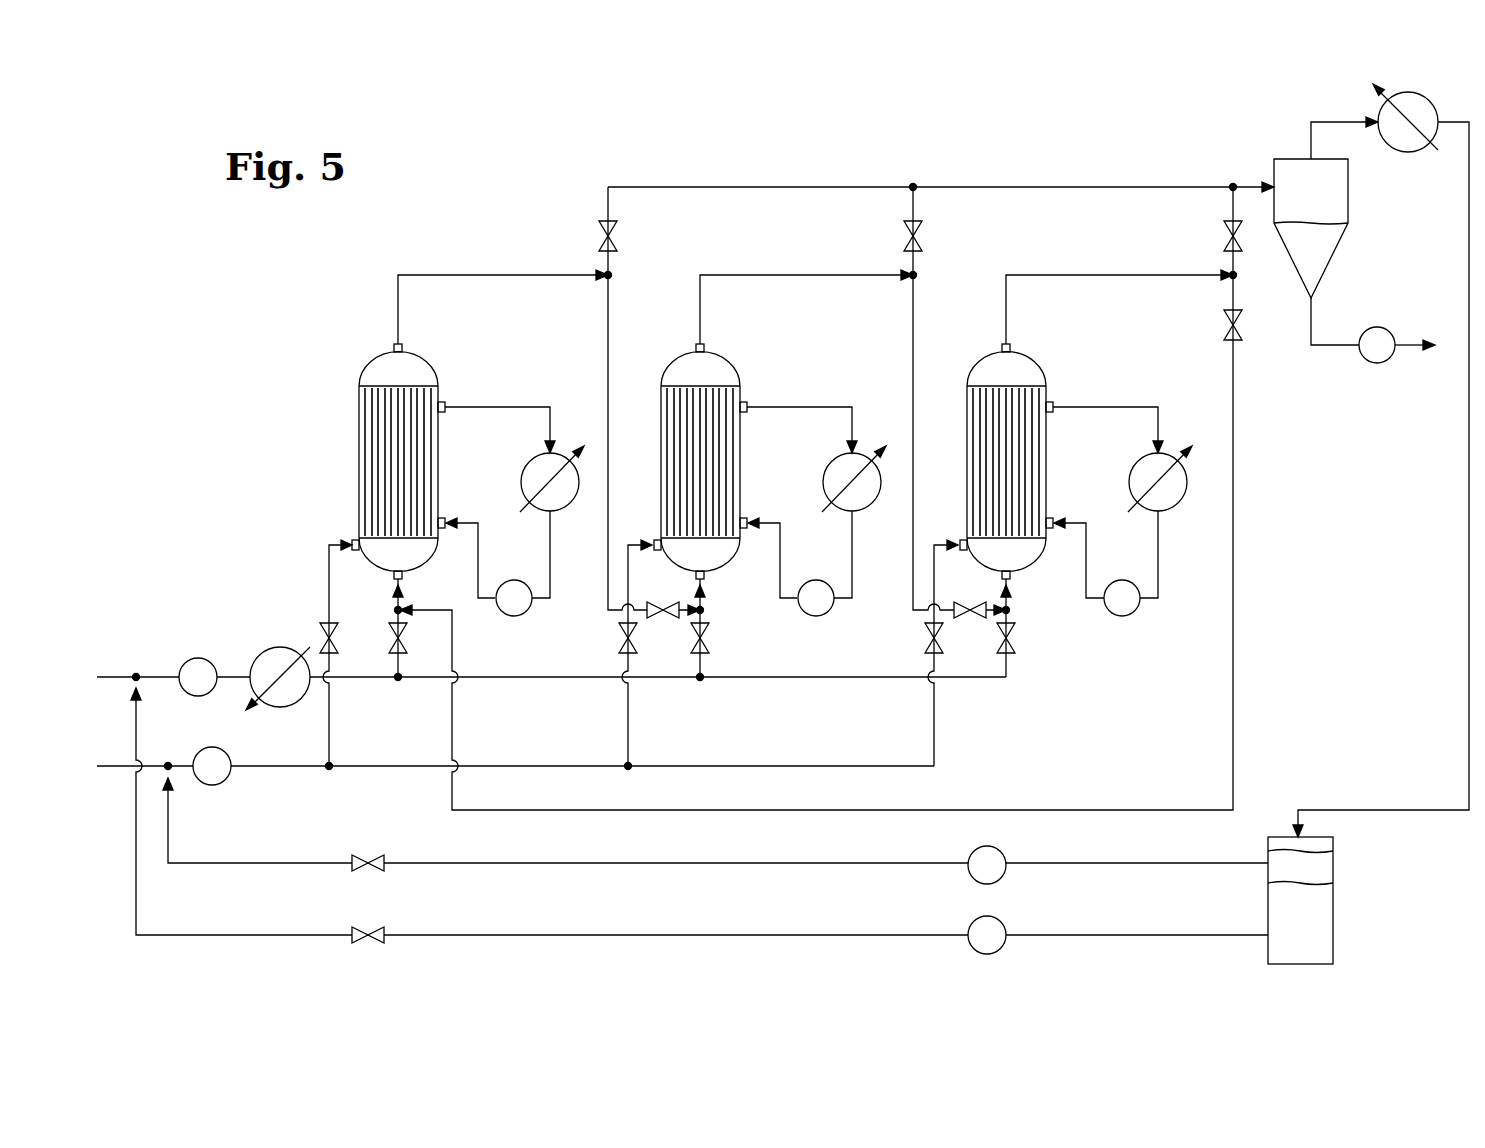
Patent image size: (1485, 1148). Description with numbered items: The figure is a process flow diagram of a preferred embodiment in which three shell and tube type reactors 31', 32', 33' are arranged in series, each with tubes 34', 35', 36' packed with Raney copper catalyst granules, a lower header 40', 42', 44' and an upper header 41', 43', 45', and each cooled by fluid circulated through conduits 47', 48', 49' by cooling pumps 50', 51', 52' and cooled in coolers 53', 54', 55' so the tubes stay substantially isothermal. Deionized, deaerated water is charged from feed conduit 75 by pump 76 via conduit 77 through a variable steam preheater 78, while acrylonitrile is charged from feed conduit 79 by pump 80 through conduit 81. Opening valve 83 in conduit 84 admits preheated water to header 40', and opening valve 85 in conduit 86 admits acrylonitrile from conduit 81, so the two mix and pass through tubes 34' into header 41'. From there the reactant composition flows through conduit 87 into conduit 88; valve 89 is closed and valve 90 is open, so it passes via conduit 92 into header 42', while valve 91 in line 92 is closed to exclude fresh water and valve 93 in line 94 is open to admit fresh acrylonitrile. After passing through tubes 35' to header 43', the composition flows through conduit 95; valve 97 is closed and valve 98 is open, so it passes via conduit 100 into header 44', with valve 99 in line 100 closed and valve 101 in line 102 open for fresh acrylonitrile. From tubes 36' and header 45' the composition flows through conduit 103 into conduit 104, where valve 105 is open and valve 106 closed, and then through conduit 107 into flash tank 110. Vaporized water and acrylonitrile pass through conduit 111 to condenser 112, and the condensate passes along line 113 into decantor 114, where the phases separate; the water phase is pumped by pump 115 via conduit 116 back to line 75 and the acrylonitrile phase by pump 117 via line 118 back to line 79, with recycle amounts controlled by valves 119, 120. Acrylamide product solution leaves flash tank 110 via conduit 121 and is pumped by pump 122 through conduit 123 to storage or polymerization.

The reactor 31' is at (397, 445).
The reactor 32' is at (705, 442).
The reactor 33' is at (1010, 442).
The tubes 34' is at (369, 462).
The tubes 35' is at (674, 462).
The tubes 36' is at (980, 462).
The header 40' is at (414, 564).
The header 41' is at (423, 366).
The header 42' is at (717, 561).
The header 43' is at (728, 366).
The header 44' is at (1021, 561).
The header 45' is at (1034, 366).
The conduit 47' is at (500, 502).
The conduit 48' is at (802, 502).
The conduit 49' is at (1108, 502).
The cooling pump 50' is at (530, 613).
The cooling pump 51' is at (828, 613).
The cooling pump 52' is at (1134, 613).
The cooler 53' is at (528, 476).
The cooler 54' is at (831, 476).
The cooler 55' is at (1136, 476).
The feed conduit 75 is at (108, 676).
The pump 76 is at (199, 658).
The conduit 77 is at (232, 678).
The variable steam preheater 78 is at (268, 648).
The feed conduit 79 is at (163, 765).
The pump 80 is at (222, 760).
The conduit 81 is at (268, 765).
The valve 83 is at (396, 648).
The conduit 84 is at (396, 606).
The valve 85 is at (331, 640).
The conduit 86 is at (328, 588).
The conduit 87 is at (506, 274).
The conduit 88 is at (609, 340).
The valve 89 is at (616, 238).
The valve 90 is at (664, 606).
The valve 91 is at (706, 642).
The conduit 92 is at (706, 606).
The valve 93 is at (630, 642).
The line 94 is at (626, 560).
The conduit 95 is at (799, 274).
The valve 97 is at (922, 240).
The valve 98 is at (970, 606).
The valve 99 is at (1010, 644).
The conduit 100 is at (1012, 606).
The valve 101 is at (936, 644).
The line 102 is at (933, 562).
The conduit 103 is at (1070, 274).
The conduit 104 is at (1236, 276).
The valve 105 is at (1224, 236).
The valve 106 is at (1238, 334).
The conduit 107 is at (1028, 186).
The flash tank 110 is at (1348, 200).
The conduit 111 is at (1310, 136).
The condenser 112 is at (1412, 93).
The condensate return line 113 is at (1468, 492).
The decantor 114 is at (1340, 910).
The pump 115 is at (1002, 922).
The conduit 116 is at (625, 935).
The pump 117 is at (1002, 852).
The line 118 is at (637, 848).
The valve 119 is at (368, 928).
The valve 120 is at (368, 855).
The conduit 121 is at (1312, 330).
The pump 122 is at (1390, 328).
The conduit 123 is at (1410, 352).